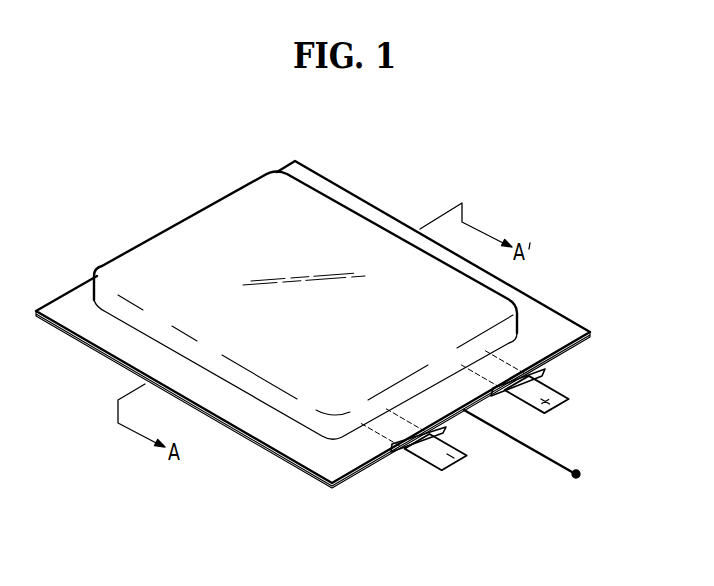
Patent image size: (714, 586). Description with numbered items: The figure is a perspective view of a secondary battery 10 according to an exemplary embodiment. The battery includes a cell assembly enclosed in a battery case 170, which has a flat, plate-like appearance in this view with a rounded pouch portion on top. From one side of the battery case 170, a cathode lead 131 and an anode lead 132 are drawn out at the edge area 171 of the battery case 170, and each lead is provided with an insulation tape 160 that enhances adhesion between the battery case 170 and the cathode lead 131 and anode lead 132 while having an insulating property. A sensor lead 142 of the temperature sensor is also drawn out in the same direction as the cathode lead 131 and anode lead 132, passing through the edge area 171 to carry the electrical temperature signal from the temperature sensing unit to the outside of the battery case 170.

The secondary battery 10 is at (368, 137).
The battery case 170 is at (383, 212).
The edge area 171 is at (557, 328).
The insulation tape 160 is at (545, 372).
The cathode lead 131 is at (566, 393).
The anode lead 132 is at (453, 467).
The sensor lead 142 is at (560, 463).